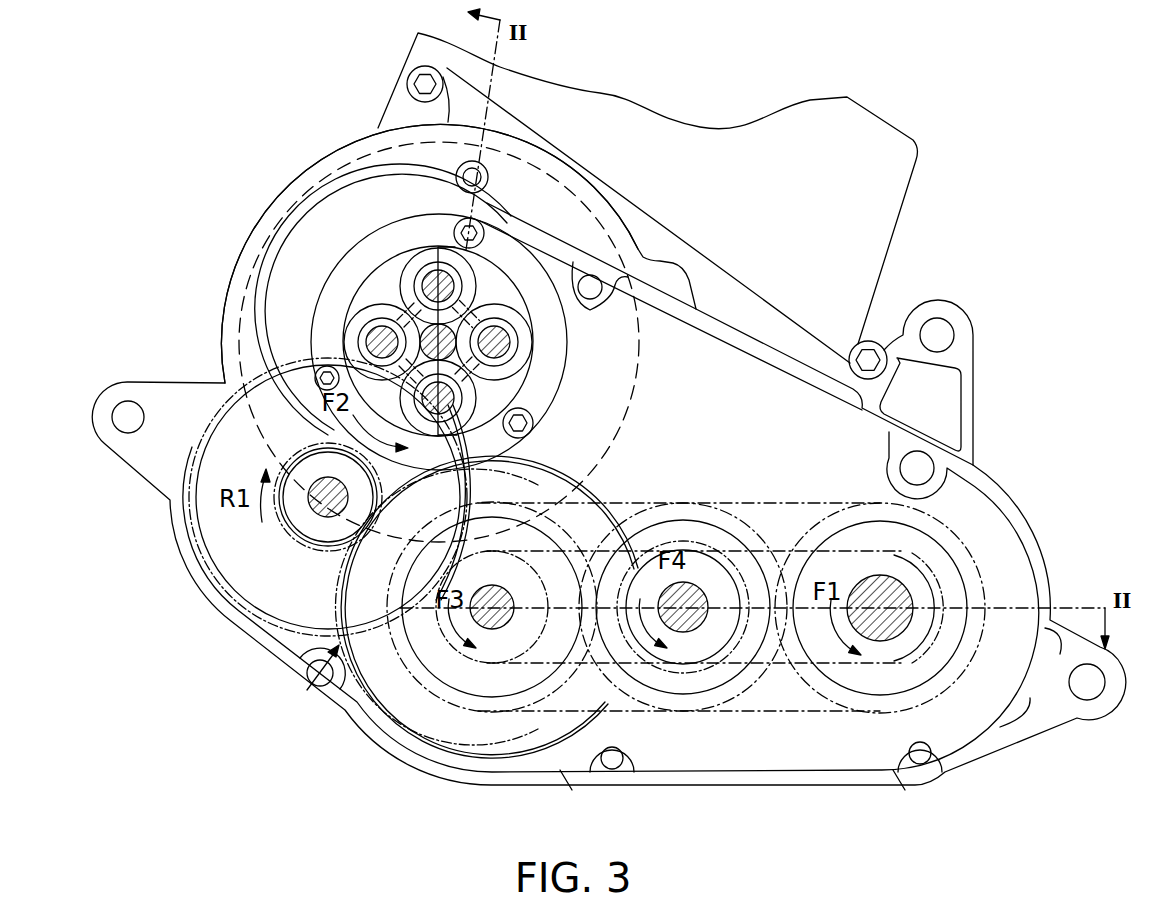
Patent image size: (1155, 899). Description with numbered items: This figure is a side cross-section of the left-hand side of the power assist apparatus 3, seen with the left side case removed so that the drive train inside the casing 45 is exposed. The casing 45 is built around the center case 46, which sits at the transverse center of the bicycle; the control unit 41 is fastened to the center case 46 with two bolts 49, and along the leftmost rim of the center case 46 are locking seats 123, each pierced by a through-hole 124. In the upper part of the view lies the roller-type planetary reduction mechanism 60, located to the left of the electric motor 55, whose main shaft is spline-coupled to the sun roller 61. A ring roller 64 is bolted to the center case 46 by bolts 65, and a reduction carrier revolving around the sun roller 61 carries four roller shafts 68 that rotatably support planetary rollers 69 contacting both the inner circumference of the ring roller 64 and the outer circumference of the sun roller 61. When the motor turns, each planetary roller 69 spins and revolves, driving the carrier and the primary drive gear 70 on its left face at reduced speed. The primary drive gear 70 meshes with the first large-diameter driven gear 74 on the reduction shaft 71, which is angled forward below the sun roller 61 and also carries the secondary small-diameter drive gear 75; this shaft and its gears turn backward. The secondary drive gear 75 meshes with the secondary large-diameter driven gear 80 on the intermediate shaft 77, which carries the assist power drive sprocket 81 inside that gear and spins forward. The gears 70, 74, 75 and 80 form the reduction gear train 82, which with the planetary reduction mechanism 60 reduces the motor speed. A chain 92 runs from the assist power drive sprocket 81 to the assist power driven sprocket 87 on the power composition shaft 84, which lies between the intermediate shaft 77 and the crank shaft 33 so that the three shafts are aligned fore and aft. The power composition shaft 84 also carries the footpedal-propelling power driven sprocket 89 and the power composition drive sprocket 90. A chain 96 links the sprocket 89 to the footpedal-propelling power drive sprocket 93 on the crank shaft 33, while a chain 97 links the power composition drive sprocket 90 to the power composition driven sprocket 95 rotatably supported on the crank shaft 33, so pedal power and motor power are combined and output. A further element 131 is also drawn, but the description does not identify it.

The power assist apparatus 3 is at (198, 132).
The crank shaft 33 is at (862, 575).
The control unit 41 is at (906, 120).
The casing 45 is at (175, 535).
The center case 46 is at (611, 496).
The bolts 49 is at (410, 78).
The electric motor 55 is at (250, 255).
The planetary reduction mechanism 60 is at (258, 292).
The sun roller 61 is at (392, 255).
The ring roller 64 is at (340, 270).
The bolts 65 is at (481, 222).
The roller shafts 68 is at (458, 292).
The planetary rollers 69 is at (504, 268).
The primary drive gear 70 is at (535, 422).
The reduction shaft 71 is at (312, 508).
The first large-diameter driven gear 74 is at (313, 537).
The secondary small-diameter drive gear 75 is at (292, 598).
The intermediate shaft 77 is at (492, 630).
The secondary large-diameter driven gear 80 is at (340, 733).
The assist power drive sprocket 81 is at (382, 750).
The reduction gear train 82 is at (308, 688).
The power composition shaft 84 is at (683, 632).
The assist power driven sprocket 87 is at (592, 607).
The footpedal-propelling power driven sprocket 89 is at (696, 607).
The power composition drive sprocket 90 is at (713, 700).
The chain 92 is at (530, 705).
The footpedal-propelling power drive sprocket 93 is at (965, 750).
The power composition driven sprocket 95 is at (880, 608).
The chain 96 is at (742, 500).
The chain 97 is at (679, 607).
The locking seats 123 is at (575, 765).
The through-holes 124 is at (622, 748).
The bolt 131 is at (456, 176).